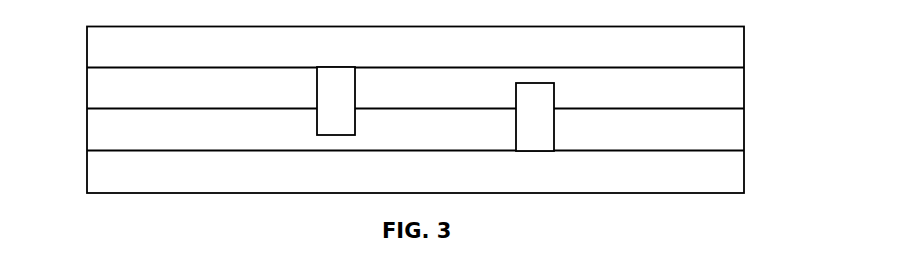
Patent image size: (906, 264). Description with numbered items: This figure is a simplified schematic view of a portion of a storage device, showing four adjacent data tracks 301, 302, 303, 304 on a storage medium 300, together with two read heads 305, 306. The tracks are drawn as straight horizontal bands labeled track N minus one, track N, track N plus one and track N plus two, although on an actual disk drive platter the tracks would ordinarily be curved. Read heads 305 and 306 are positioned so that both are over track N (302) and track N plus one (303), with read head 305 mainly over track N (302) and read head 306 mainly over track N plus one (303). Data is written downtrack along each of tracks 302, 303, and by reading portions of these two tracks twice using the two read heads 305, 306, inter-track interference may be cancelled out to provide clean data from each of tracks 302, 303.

The storage medium 300 is at (80, 27).
The data track N-1 301 is at (749, 27).
The data track N 302 is at (749, 68).
The data track N+1 303 is at (749, 109).
The data track N+2 304 is at (749, 151).
The read head 305 is at (337, 72).
The read head 306 is at (540, 148).